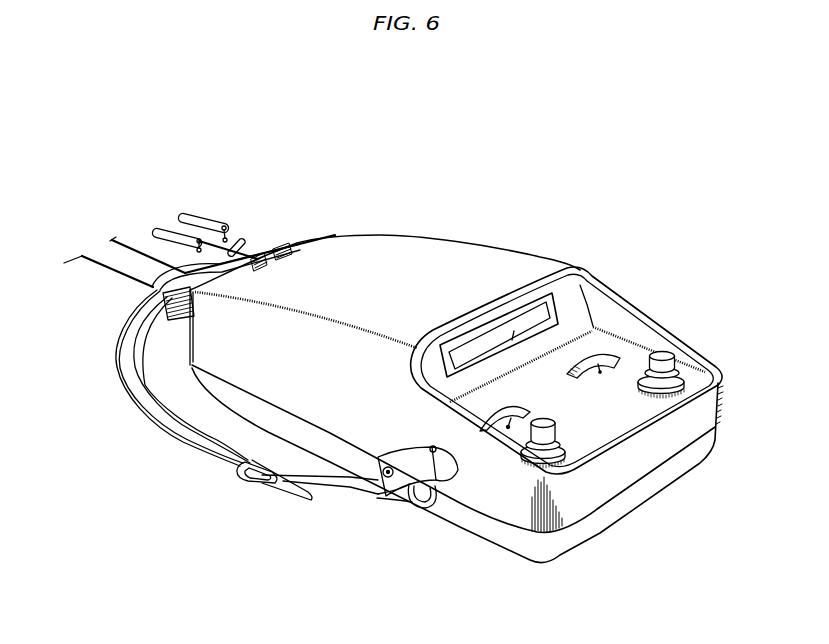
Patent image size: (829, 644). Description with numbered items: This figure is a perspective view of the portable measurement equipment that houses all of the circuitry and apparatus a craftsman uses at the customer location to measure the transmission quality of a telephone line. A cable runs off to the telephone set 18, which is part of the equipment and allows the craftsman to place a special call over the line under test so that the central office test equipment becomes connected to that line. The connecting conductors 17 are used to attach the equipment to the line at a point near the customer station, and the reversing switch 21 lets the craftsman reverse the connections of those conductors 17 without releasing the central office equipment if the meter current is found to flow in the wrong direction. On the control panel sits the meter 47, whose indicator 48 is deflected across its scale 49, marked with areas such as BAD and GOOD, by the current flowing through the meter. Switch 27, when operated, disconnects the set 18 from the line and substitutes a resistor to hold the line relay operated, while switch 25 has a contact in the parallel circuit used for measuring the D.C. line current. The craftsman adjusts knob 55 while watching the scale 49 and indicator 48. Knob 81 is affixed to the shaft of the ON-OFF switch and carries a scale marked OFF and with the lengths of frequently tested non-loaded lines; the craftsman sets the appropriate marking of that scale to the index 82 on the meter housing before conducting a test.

The connecting conductors 17 is at (243, 243).
The telephone set 18 is at (82, 256).
The reversing switch 21 is at (213, 275).
The switch 25 is at (556, 433).
The switch 27 is at (670, 357).
The meter 47 is at (516, 256).
The indicator 48 is at (512, 341).
The scale 49 is at (537, 314).
The knob 55 is at (603, 371).
The knob 81 is at (489, 419).
The index 82 is at (511, 427).